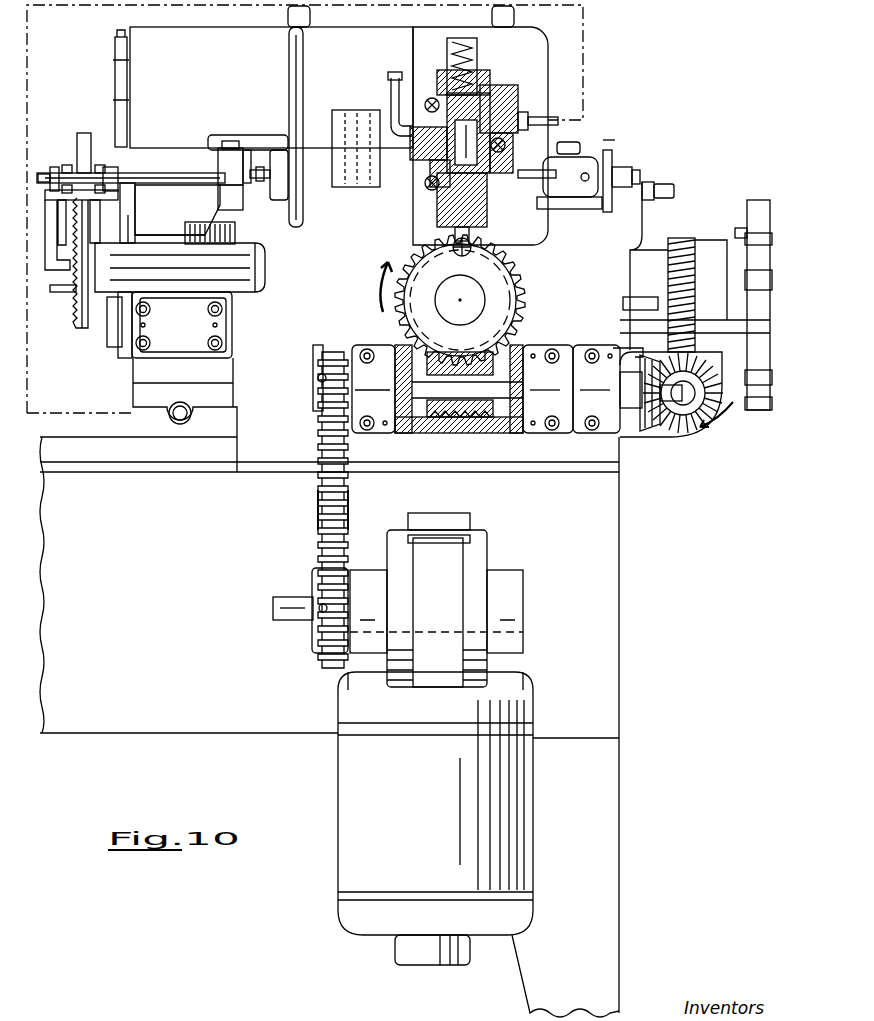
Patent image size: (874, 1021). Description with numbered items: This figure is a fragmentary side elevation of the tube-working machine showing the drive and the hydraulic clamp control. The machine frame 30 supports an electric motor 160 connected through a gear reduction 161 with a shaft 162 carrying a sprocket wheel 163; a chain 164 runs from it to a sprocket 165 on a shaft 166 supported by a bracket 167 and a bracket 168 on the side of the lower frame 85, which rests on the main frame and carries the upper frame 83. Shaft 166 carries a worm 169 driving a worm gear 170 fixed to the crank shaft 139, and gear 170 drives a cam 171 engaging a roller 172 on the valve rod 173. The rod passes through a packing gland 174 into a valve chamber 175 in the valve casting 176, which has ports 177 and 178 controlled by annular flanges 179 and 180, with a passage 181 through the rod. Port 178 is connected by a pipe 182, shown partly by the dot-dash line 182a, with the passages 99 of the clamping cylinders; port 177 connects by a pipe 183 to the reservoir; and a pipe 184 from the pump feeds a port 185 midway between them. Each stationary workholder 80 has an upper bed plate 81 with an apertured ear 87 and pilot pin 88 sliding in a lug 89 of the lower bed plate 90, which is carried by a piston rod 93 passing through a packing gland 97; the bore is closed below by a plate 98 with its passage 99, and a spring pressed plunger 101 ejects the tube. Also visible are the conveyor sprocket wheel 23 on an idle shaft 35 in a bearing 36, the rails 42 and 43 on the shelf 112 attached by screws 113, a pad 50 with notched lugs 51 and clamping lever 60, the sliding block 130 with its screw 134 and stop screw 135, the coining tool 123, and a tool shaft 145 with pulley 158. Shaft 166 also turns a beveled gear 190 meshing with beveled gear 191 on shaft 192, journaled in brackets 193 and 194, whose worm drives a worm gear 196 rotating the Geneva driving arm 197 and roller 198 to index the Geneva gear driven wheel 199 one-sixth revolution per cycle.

The sprocket wheel 23 is at (78, 316).
The machine frame 30 is at (614, 658).
The idle shaft 35 is at (75, 290).
The bearing 36 is at (247, 263).
The rail 42 is at (50, 242).
The rail 43 is at (115, 233).
The pad 50 is at (50, 190).
The lug 51 is at (110, 168).
The clamping lever 60 is at (83, 135).
The stationary workholder 80 is at (183, 160).
The upper bed plate 81 is at (220, 148).
The upper frame 83 is at (137, 27).
The lower frame 85 is at (253, 455).
The apertured ear 87 is at (244, 154).
The pilot pin 88 is at (235, 145).
The lug 89 is at (238, 212).
The lower bed plate 90 is at (155, 215).
The piston rod 93 is at (185, 235).
The packing gland 97 is at (192, 232).
The plate 98 is at (140, 397).
The passage 99 is at (180, 425).
The spring pressed plunger 101 is at (125, 165).
The shelf 112 is at (105, 312).
The screws 113 is at (150, 312).
The tool 123 is at (265, 186).
The sliding block 130 is at (282, 150).
The screw 134 is at (608, 150).
The stop screw 135 is at (666, 184).
The crank shaft 139 is at (450, 312).
The shaft 145 is at (635, 176).
The pulley 158 is at (612, 162).
The electric motor 160 is at (350, 762).
The gear reduction 161 is at (445, 568).
The shaft 162 is at (296, 622).
The sprocket wheel 163 is at (310, 590).
The chain 164 is at (348, 498).
The sprocket 165 is at (318, 380).
The shaft 166 is at (470, 388).
The bracket 167 is at (532, 428).
The bracket 168 is at (598, 430).
The worm 169 is at (462, 420).
The worm gear 170 is at (520, 293).
The cam 171 is at (505, 265).
The roller 172 is at (453, 250).
The valve rod 173 is at (470, 232).
The packing gland 174 is at (437, 222).
The valve chamber 175 is at (483, 94).
The valve casting 176 is at (502, 100).
The port 177 is at (505, 175).
The port 178 is at (500, 118).
The annular flange 179 is at (440, 190).
The annular flange 180 is at (445, 135).
The passage 181 is at (455, 145).
The pipe 182 is at (182, 406).
The dot-dash line 182a is at (28, 372).
The pipe 183 is at (560, 182).
The pipe 184 is at (395, 76).
The port 185 is at (425, 160).
The beveled gear 190 is at (652, 428).
The beveled gear 191 is at (667, 432).
The shaft 192 is at (690, 440).
The bracket 193 is at (640, 355).
The bracket 194 is at (728, 400).
The worm gear 196 is at (668, 250).
The Geneva driving arm 197 is at (743, 236).
The roller 198 is at (750, 225).
The Geneva gear driven wheel 199 is at (764, 200).